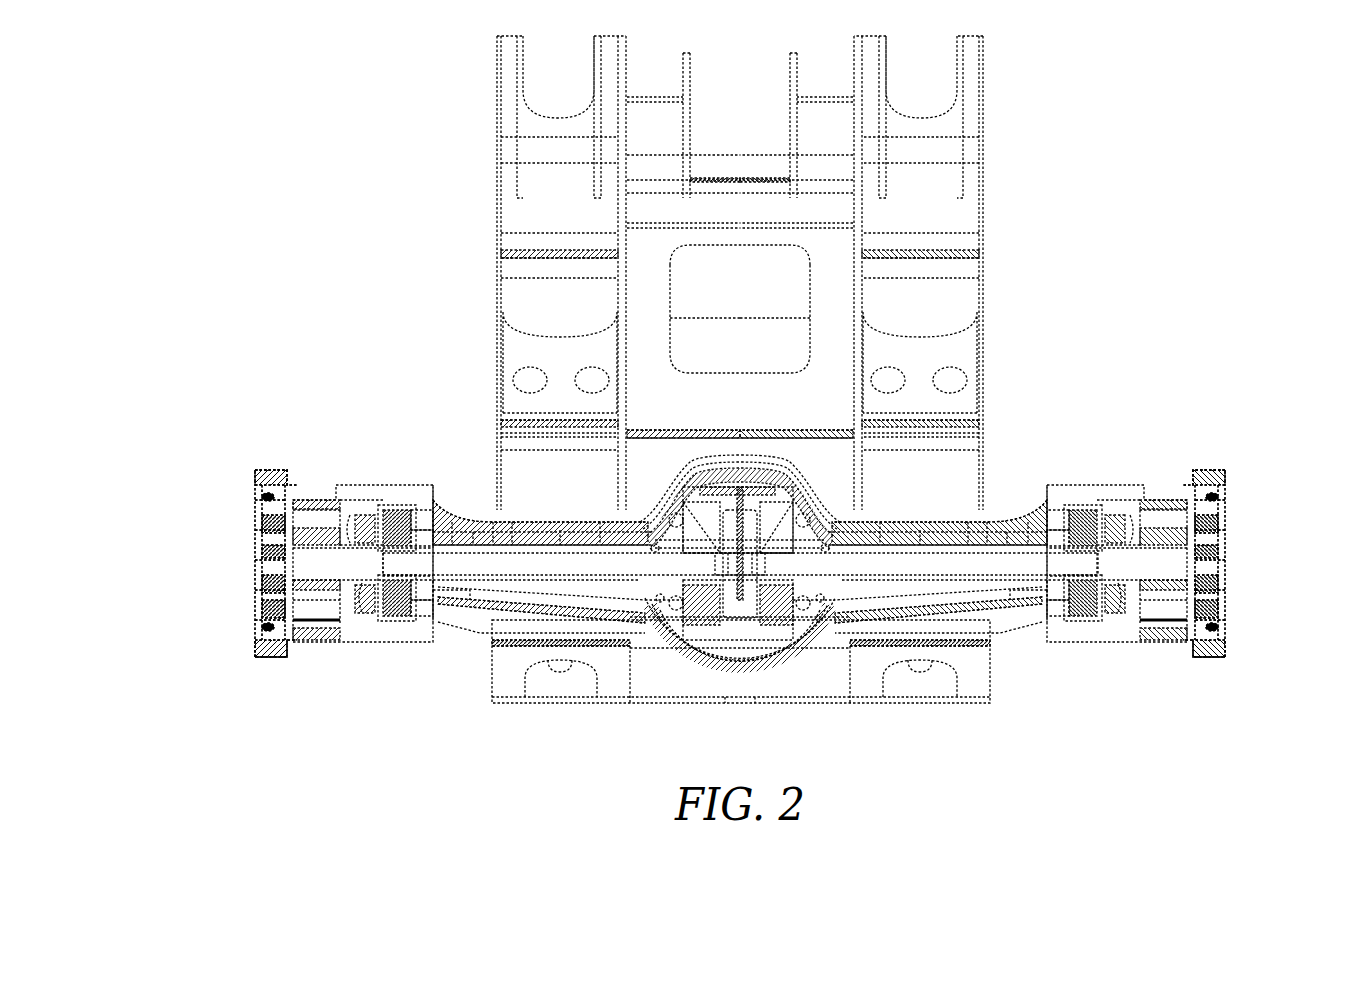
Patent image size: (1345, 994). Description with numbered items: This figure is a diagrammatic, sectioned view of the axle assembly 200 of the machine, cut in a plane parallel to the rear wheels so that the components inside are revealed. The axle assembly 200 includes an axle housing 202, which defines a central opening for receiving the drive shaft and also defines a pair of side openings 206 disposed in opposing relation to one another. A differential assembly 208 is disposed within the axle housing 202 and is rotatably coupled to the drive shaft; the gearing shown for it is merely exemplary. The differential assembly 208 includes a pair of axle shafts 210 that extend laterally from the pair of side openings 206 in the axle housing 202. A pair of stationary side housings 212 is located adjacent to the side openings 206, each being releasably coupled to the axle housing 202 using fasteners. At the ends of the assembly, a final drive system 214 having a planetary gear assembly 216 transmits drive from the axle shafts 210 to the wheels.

The axle assembly 200 is at (1210, 412).
The axle housing 202 is at (807, 474).
The side openings 206 is at (416, 485).
The differential assembly 208 is at (690, 608).
The axle shafts 210 is at (553, 565).
The stationary side housings 212 is at (333, 486).
The final drive system 214 is at (316, 499).
The planetary gear assembly 216 is at (736, 492).